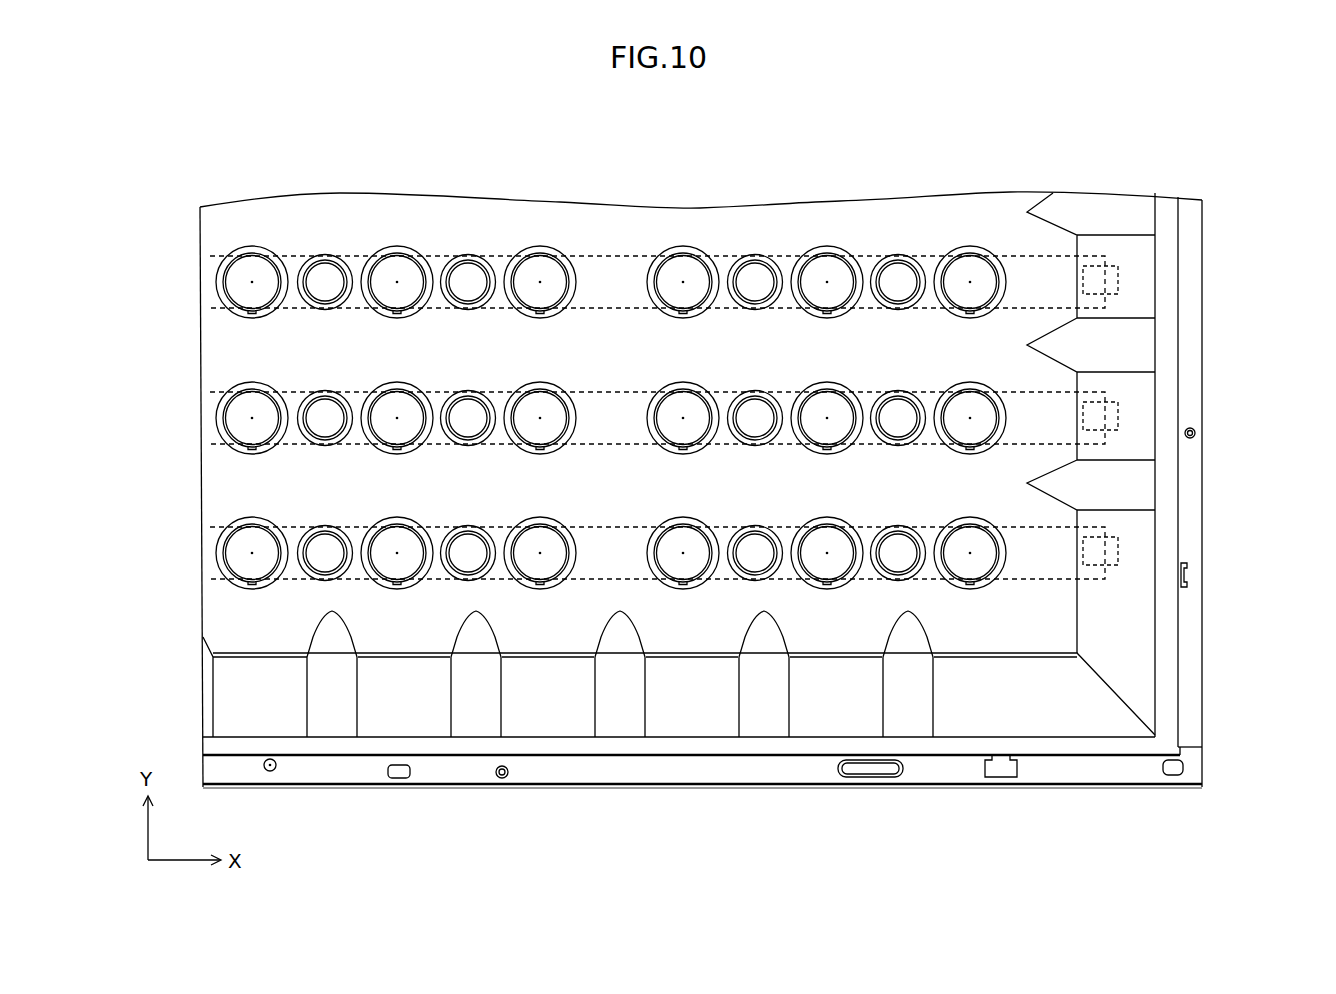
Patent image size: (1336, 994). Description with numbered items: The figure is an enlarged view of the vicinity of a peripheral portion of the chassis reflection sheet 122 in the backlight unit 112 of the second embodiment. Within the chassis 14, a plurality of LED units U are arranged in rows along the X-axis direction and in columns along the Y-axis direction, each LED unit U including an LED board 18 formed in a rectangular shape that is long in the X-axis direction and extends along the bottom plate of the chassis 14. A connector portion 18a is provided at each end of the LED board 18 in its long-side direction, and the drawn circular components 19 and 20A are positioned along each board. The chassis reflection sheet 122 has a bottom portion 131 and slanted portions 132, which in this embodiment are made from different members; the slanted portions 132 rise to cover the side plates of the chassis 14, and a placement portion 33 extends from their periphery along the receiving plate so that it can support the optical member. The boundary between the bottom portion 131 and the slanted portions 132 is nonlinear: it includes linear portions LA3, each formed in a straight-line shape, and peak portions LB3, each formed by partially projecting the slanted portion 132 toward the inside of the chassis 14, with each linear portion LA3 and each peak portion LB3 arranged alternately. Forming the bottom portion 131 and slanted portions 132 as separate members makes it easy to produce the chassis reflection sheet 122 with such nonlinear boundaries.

The chassis 14 is at (372, 770).
The LED board 18 is at (614, 420).
The connector portion 18a is at (1222, 400).
The LED 19 is at (523, 273).
The LED board 20A is at (326, 280).
The linear portion LA3 is at (1077, 317).
The peak portion LB3 is at (1055, 363).
The slanted portion 132 is at (1132, 485).
The placement portion 33 is at (1167, 620).
The bottom portion 131 is at (1053, 632).
The chassis reflection sheet 122 is at (1133, 658).
The backlight unit 112 is at (1218, 758).
The LED unit U is at (183, 289).